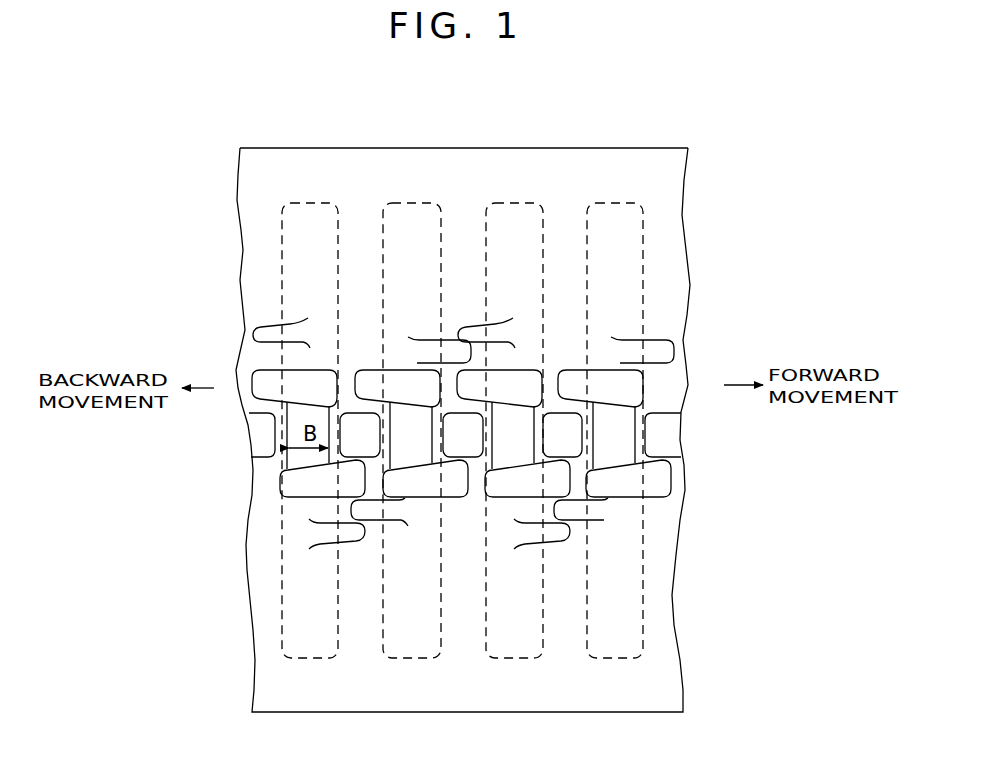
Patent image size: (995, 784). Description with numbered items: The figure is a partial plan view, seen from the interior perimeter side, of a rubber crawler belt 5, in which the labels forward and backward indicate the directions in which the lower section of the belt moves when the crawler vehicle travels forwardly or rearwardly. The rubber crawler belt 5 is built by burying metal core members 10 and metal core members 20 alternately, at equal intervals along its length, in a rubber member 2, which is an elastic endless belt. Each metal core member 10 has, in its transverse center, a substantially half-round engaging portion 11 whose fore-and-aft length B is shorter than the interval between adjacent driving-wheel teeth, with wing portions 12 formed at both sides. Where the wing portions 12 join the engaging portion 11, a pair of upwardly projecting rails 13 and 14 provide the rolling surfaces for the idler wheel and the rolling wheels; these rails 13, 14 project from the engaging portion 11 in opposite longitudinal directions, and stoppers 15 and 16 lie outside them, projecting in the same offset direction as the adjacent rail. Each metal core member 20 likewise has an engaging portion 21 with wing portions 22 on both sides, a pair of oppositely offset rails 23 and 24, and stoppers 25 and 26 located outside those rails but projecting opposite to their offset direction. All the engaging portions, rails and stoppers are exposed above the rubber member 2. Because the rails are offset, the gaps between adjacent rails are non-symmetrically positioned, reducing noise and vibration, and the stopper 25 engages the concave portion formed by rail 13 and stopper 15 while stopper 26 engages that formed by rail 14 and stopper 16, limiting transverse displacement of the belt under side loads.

The rubber crawler belt 5 is at (264, 147).
The rubber member 2 is at (378, 147).
The metal core member 10 is at (508, 331).
The metal core member 20 is at (644, 332).
The engaging portion 11 is at (288, 428).
The engaging portion 21 is at (636, 433).
The wing portions 12 is at (288, 262).
The wing portions 22 is at (641, 250).
The rail 13 is at (527, 369).
The rail 14 is at (507, 500).
The rail 23 is at (610, 369).
The rail 24 is at (663, 497).
The stopper 15 is at (270, 328).
The stopper 16 is at (348, 545).
The stopper 25 is at (655, 341).
The stopper 26 is at (598, 521).